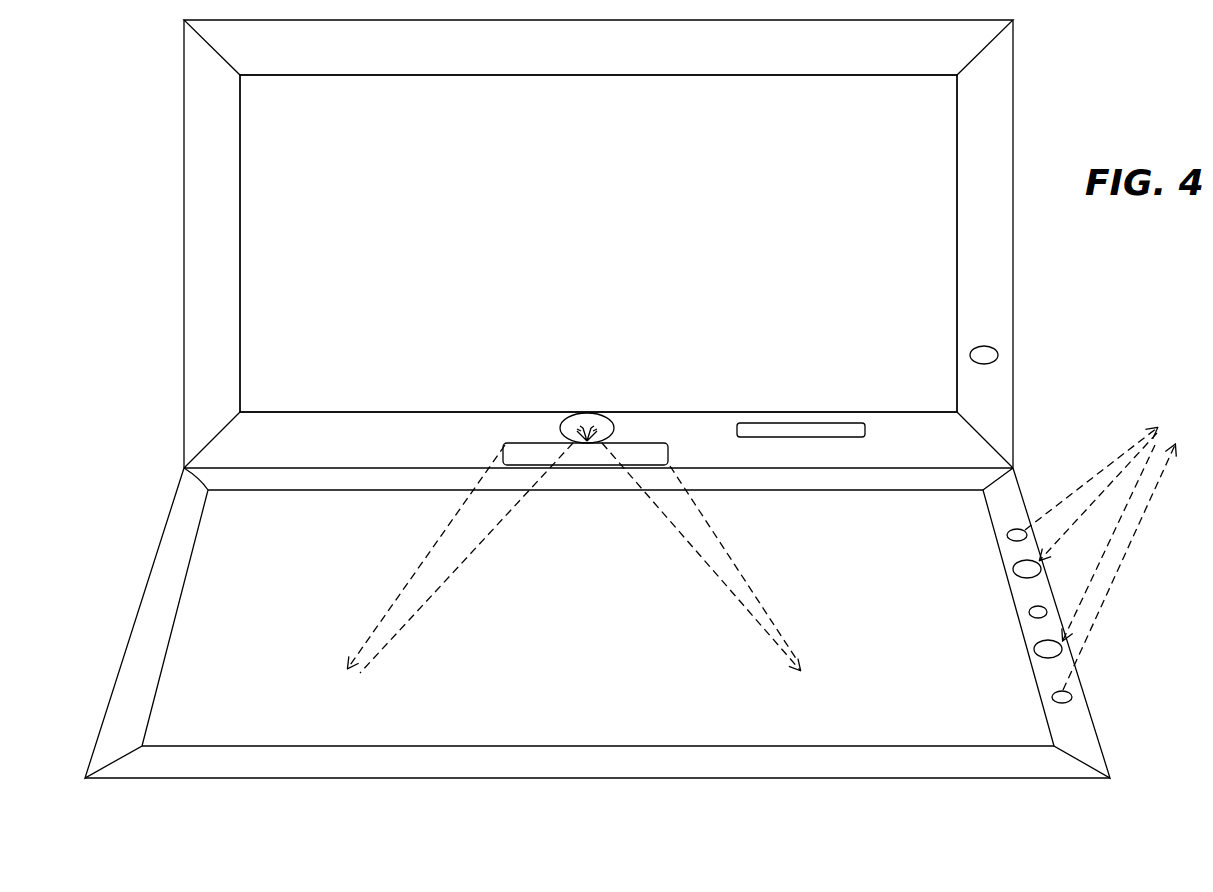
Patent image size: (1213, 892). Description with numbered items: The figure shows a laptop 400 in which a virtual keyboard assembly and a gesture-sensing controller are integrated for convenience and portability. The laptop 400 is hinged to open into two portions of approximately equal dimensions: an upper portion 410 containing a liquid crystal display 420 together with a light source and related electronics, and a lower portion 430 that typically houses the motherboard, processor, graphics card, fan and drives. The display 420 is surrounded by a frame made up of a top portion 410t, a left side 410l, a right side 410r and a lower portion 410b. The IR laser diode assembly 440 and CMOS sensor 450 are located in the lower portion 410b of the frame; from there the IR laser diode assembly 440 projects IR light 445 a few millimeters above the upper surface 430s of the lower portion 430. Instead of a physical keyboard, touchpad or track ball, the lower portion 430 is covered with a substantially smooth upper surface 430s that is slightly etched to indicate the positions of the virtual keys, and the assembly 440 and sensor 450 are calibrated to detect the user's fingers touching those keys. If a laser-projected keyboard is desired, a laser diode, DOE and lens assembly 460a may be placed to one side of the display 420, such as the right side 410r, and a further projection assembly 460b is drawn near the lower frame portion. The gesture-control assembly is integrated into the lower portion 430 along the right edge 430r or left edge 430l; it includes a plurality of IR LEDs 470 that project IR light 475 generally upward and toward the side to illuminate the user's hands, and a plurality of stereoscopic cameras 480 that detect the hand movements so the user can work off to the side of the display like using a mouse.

The laptop 400 is at (1028, 118).
The upper portion 410 is at (1028, 348).
The top portion of the frame 410t is at (365, 61).
The left side of the frame 410l is at (240, 201).
The right side of the frame 410r is at (1013, 202).
The lower portion of the frame 410b is at (356, 459).
The liquid crystal display 420 is at (752, 204).
The lower portion 430 is at (330, 762).
The left edge of the lower portion 430l is at (185, 621).
The right edge of the lower portion 430r is at (1115, 761).
The upper surface 430s is at (604, 684).
The IR laser diode assembly 440 is at (513, 433).
The IR light 445 is at (360, 616).
The CMOS sensor 450 is at (587, 400).
The laser diode, DOE, and lens assembly 460a is at (950, 341).
The speaker 460b is at (801, 412).
The IR LEDs 470 is at (993, 537).
The air flow 475 is at (1205, 584).
The stereoscopic cameras 480 is at (1018, 642).